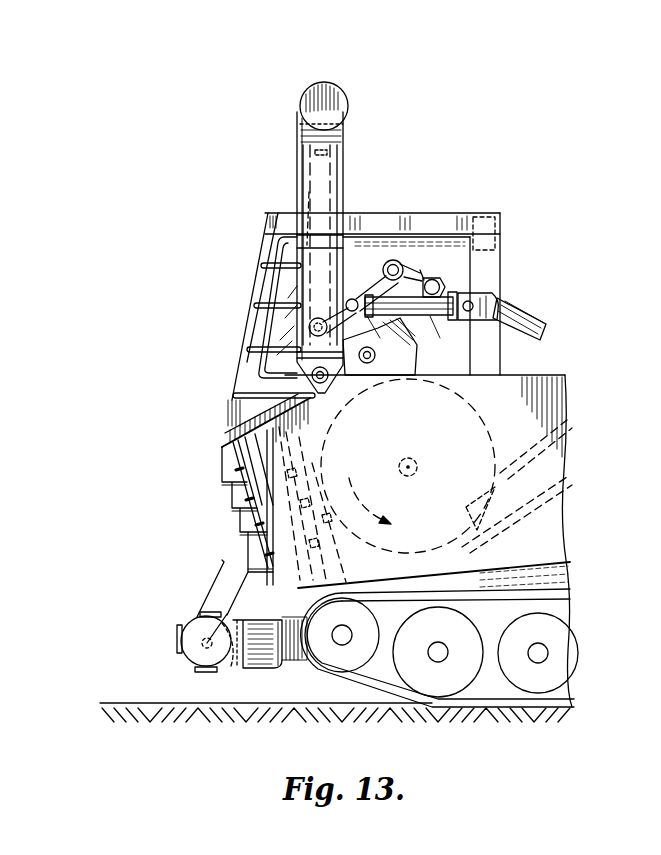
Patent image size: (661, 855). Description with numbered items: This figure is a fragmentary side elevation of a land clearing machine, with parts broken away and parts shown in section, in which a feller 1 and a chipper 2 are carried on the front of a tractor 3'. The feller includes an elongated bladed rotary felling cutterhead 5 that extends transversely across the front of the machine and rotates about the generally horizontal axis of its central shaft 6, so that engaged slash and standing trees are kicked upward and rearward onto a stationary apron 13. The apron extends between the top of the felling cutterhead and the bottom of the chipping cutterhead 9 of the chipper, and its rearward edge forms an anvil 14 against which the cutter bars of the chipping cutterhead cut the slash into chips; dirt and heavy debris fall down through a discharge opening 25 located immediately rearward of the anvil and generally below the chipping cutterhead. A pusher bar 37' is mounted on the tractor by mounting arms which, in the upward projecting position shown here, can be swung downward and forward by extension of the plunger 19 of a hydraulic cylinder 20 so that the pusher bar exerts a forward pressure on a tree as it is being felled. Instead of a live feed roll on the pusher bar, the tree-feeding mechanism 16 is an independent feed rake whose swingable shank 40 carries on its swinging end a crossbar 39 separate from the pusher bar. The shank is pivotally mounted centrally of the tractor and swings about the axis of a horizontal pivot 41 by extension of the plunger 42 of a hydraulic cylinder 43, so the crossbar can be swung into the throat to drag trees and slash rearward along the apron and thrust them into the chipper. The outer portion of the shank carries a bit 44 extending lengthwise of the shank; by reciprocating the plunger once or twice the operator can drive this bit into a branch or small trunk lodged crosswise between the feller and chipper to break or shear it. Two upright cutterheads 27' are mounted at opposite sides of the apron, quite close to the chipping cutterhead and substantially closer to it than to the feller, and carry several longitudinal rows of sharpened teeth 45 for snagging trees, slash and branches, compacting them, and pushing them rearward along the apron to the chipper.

The feller 1 is at (176, 660).
The chipper 2 is at (482, 399).
The tractor 3' is at (580, 541).
The felling cutterhead 5 is at (170, 647).
The central shaft 6 is at (184, 670).
The chipping cutterhead 9 is at (477, 428).
The apron 13 is at (242, 600).
The anvil 14 is at (405, 558).
The tree-feeding mechanism 16 is at (299, 174).
The plunger 19 is at (355, 292).
The hydraulic cylinder 20 is at (430, 320).
The discharge opening 25 is at (458, 551).
The upright cutterheads 27' is at (230, 489).
The pusher bar 37' is at (339, 90).
The crossbar 39 is at (337, 148).
The shank 40 is at (262, 283).
The pivot 41 is at (300, 394).
The plunger 42 is at (428, 280).
The hydraulic cylinder 43 is at (527, 320).
The bit 44 is at (309, 192).
The teeth 45 is at (245, 525).